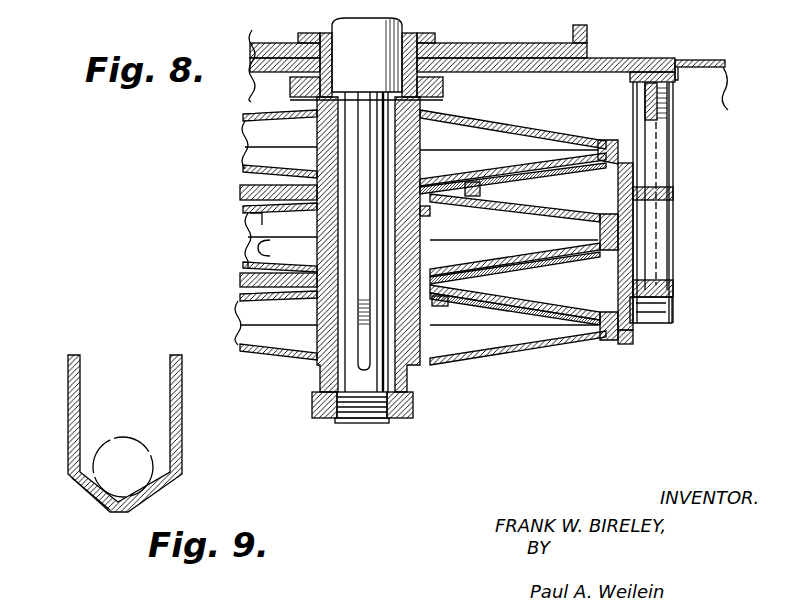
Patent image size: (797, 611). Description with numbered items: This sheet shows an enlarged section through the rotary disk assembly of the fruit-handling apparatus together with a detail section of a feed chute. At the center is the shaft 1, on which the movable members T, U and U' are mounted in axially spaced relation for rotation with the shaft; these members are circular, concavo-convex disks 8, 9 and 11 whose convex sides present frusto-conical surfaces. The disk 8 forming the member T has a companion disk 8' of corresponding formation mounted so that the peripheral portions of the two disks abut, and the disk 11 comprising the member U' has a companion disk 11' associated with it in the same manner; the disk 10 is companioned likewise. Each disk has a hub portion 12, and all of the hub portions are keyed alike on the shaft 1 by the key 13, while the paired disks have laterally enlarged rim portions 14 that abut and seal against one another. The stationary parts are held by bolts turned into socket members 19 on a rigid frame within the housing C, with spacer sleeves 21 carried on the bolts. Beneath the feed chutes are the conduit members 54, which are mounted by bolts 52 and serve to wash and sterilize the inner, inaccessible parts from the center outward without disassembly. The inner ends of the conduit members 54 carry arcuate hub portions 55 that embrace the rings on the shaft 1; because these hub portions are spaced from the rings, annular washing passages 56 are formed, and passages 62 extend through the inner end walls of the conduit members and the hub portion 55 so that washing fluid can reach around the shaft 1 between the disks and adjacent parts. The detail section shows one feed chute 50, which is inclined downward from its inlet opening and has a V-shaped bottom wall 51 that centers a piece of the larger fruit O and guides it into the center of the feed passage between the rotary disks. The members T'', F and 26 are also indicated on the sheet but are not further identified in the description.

In FIG. 8, the shaft 1 is at (345, 365).
In FIG. 8, the key 13 is at (360, 162).
In FIG. 8, the spacer discs 26 is at (243, 192).
In FIG. 8, the disk 10 is at (252, 222).
In FIG. 8, the disk 9 is at (258, 250).
In FIG. 8, the companion disk 11' is at (513, 116).
In FIG. 8, the hub portion 12 is at (412, 136).
In FIG. 8, the disk 11 is at (514, 145).
In FIG. 8, the movable member U' is at (513, 146).
In FIG. 8, the passages 62 is at (472, 182).
In FIG. 8, the second cone upper wall T'' is at (515, 158).
In FIG. 8, the annular washing passages 56 is at (418, 214).
In FIG. 8, the conduit members 54 is at (524, 257).
In FIG. 8, the arcuate hub portion 55 is at (423, 267).
In FIG. 8, the movable member U is at (515, 325).
In FIG. 8, the disk 8 is at (515, 334).
In FIG. 8, the movable member T is at (515, 342).
In FIG. 8, the companion disk 8' is at (524, 352).
In FIG. 8, the rim portion 14 is at (618, 322).
In FIG. 8, the socket member 19 is at (671, 133).
In FIG. 8, the spacer sleeve 21 is at (653, 223).
In FIG. 8, the bolts 52 is at (672, 313).
In FIG. 8, the frame boss F is at (588, 35).
In FIG. 8, the housing C is at (690, 59).
In FIG. 9, the feed chute 50 is at (181, 425).
In FIG. 9, the larger fruit O is at (130, 447).
In FIG. 9, the V-shaped bottom wall 51 is at (95, 482).